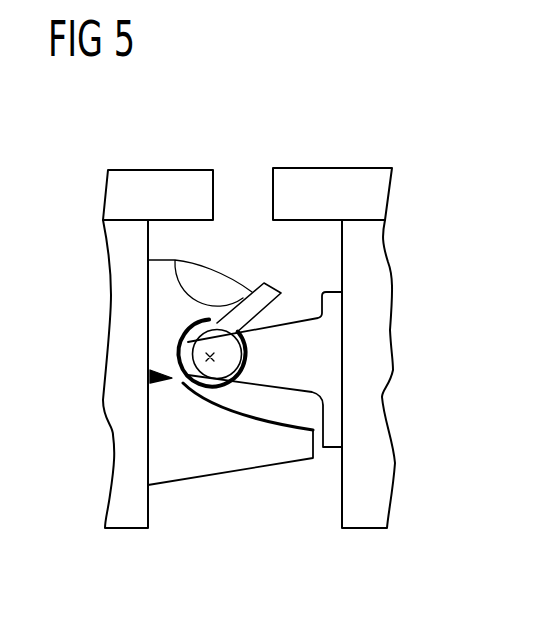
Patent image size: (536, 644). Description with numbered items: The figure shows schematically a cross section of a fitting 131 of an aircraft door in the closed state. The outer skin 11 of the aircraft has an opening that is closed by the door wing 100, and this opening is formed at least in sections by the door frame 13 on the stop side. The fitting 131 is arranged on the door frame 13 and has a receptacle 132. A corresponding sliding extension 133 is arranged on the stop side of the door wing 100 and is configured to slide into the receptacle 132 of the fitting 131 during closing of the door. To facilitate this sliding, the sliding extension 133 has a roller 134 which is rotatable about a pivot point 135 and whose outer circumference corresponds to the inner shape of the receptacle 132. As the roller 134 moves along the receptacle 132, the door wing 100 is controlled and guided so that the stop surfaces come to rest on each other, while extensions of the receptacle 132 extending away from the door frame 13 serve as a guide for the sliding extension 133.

The outer skin 11 is at (150, 180).
The door wing 100 is at (334, 180).
The door frame 13 is at (124, 519).
The fitting 131 is at (150, 274).
The receptacle 132 is at (150, 376).
The sliding extension 133 is at (290, 357).
The roller 134 is at (218, 382).
The pivot point 135 is at (180, 332).